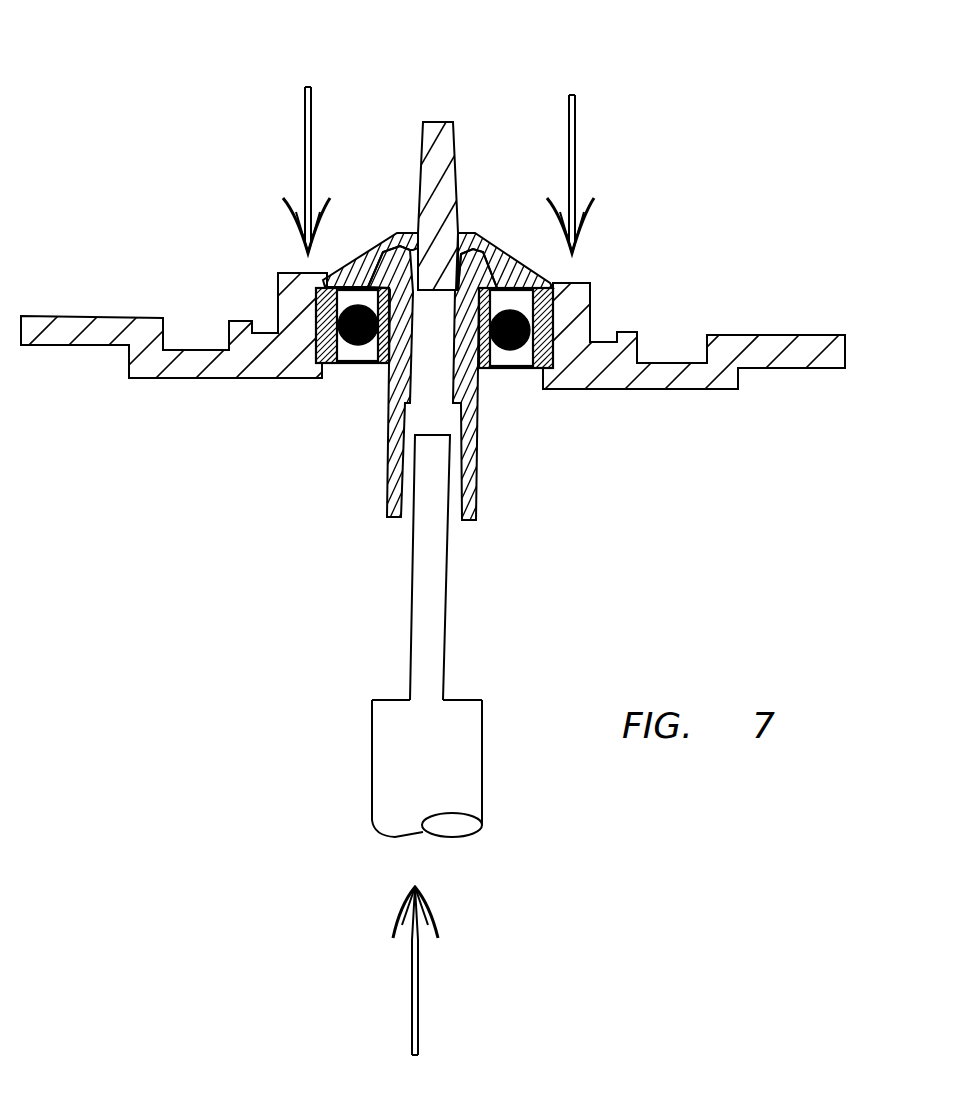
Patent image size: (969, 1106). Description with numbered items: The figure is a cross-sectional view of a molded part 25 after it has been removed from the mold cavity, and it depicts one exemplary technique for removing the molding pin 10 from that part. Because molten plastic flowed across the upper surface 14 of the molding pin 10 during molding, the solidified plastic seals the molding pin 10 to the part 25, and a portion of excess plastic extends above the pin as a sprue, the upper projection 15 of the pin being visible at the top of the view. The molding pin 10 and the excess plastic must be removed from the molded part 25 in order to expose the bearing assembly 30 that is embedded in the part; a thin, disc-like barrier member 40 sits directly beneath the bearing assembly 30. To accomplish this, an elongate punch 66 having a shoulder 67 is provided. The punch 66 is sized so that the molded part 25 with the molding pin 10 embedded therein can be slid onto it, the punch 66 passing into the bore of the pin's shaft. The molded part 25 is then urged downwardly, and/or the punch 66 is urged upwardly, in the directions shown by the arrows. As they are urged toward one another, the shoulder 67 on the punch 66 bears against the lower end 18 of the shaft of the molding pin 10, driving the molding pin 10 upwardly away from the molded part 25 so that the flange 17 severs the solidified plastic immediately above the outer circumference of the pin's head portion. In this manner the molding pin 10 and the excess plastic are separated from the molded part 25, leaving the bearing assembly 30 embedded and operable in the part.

The molding pin 10 is at (492, 407).
The upper surface 14 is at (492, 290).
The stem 15 is at (460, 163).
The flange 17 is at (322, 280).
The lower end 18 is at (393, 517).
The molded part 25 is at (667, 392).
The bearing assembly 30 is at (560, 289).
The barrier member 40 is at (363, 365).
The punch 66 is at (435, 605).
The shoulder 67 is at (465, 700).